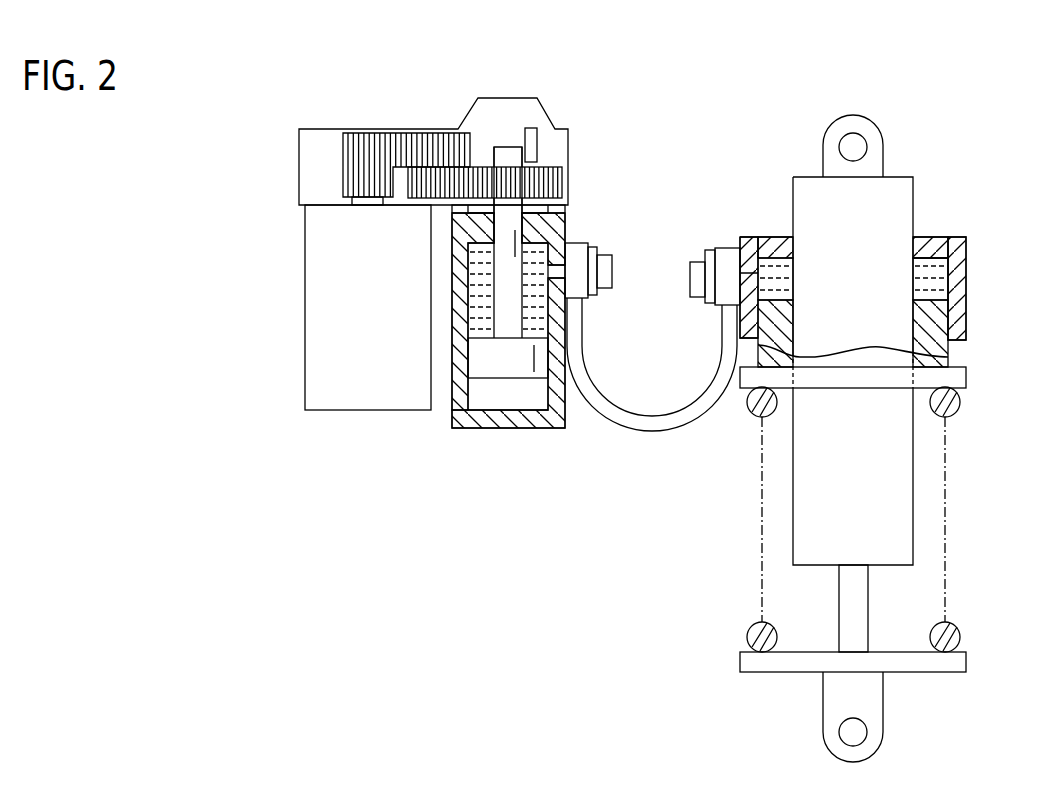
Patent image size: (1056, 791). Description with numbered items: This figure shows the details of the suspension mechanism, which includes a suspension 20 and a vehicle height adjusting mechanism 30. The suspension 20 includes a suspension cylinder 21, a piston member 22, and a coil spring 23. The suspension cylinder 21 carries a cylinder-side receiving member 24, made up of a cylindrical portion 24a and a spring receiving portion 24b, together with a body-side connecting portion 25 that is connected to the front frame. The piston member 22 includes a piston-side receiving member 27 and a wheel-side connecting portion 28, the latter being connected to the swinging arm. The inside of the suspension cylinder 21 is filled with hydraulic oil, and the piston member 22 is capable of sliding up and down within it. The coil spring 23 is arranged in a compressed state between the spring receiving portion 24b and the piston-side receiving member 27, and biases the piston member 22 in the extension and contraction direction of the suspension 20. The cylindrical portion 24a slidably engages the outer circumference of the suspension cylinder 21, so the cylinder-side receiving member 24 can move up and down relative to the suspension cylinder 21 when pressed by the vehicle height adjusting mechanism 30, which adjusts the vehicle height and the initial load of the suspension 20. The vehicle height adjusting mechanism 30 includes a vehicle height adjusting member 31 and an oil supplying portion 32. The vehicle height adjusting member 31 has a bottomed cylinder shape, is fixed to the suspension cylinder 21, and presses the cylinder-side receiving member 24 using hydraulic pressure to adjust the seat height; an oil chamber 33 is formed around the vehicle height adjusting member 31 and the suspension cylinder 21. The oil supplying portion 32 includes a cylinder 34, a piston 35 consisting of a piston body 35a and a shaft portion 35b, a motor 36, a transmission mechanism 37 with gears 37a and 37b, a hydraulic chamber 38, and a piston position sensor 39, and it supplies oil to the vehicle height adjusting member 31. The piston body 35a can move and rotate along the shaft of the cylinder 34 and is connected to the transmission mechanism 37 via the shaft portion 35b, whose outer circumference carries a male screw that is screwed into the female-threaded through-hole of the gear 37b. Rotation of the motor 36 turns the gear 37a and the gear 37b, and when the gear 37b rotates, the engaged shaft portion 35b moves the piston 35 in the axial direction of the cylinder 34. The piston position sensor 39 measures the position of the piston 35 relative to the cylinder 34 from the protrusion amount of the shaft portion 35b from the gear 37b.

The suspension 20 is at (960, 490).
The suspension cylinder 21 is at (917, 199).
The piston member 22 is at (877, 600).
The coil spring 23 is at (958, 634).
The cylinder-side receiving member 24 is at (970, 371).
The cylindrical portion 24a is at (950, 316).
The spring receiving portion 24b is at (957, 380).
The body-side connecting portion 25 is at (866, 118).
The piston-side receiving member 27 is at (948, 667).
The wheel-side connecting portion 28 is at (823, 727).
The vehicle height adjusting mechanism 30 is at (273, 135).
The vehicle height adjusting member 31 is at (970, 261).
The oil supplying portion 32 is at (299, 167).
The oil chamber 33 is at (773, 268).
The cylinder 34 is at (483, 430).
The piston 35 is at (372, 298).
The piston body 35a is at (492, 358).
The shaft portion 35b is at (510, 288).
The motor 36 is at (305, 325).
The transmission mechanism 37 is at (473, 72).
The gear 37a is at (408, 135).
The gear 37b is at (485, 167).
The hydraulic chamber 38 is at (541, 255).
The piston position sensor 39 is at (537, 145).